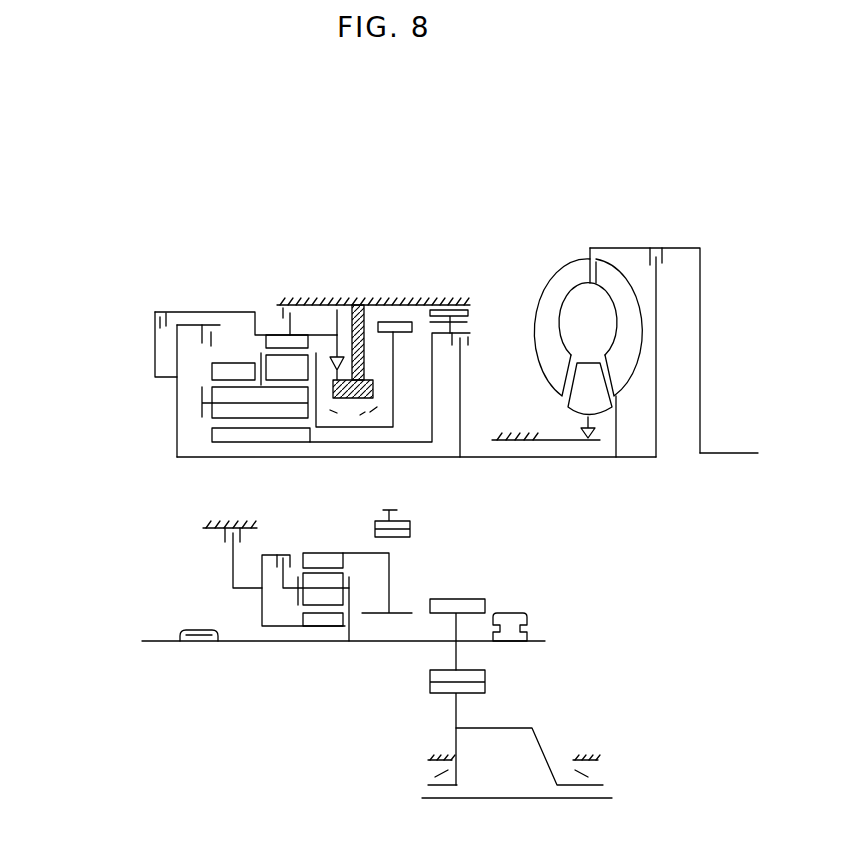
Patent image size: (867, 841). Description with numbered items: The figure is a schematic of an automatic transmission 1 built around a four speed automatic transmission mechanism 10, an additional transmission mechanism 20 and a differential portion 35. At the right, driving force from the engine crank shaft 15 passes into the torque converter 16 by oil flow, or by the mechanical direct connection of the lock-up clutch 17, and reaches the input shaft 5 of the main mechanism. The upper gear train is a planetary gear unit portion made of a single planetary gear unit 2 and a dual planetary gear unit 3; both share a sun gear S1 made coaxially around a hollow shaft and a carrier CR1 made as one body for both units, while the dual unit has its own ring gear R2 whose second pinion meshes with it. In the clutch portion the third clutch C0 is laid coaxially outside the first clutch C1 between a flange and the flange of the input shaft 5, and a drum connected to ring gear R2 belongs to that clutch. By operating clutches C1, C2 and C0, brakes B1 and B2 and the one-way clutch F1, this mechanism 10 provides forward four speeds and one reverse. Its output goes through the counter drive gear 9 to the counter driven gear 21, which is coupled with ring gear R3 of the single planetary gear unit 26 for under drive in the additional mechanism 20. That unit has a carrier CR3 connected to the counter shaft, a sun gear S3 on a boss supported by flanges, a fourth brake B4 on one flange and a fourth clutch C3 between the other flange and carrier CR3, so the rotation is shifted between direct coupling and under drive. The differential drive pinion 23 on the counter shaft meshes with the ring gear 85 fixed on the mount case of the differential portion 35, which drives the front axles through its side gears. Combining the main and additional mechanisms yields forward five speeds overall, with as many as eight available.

The automatic transmission 1 is at (162, 167).
The four speed automatic transmission mechanism 10 is at (243, 174).
The single planetary gear unit 2 is at (232, 345).
The dual planetary gear unit 3 is at (260, 312).
The counter drive gear 9 is at (393, 322).
The input shaft 5 is at (557, 460).
The engine crank shaft 15 is at (733, 453).
The torque converter 16 is at (573, 277).
The lock-up clutch 17 is at (670, 258).
The additional transmission mechanism 20 is at (193, 556).
The counter driven gear 21 is at (410, 535).
The differential drive pinion 23 is at (470, 598).
The single planetary gear unit for under drive 26 is at (333, 550).
The ring gear 85 is at (485, 688).
The differential portion 35 is at (555, 733).
The third clutch C0 is at (152, 318).
The first clutch C1 is at (201, 328).
The second clutch C2 is at (468, 337).
The fourth clutch C3 is at (283, 557).
The first brake B1 is at (470, 311).
The second brake B2 is at (280, 318).
The fourth brake B4 is at (223, 532).
The one-way clutch F1 is at (340, 352).
The ring gear R2 is at (298, 340).
The ring gear R3 is at (357, 583).
The sun gear S1 is at (218, 435).
The sun gear S3 is at (323, 622).
The carrier CR1 is at (322, 415).
The carrier CR3 is at (297, 593).